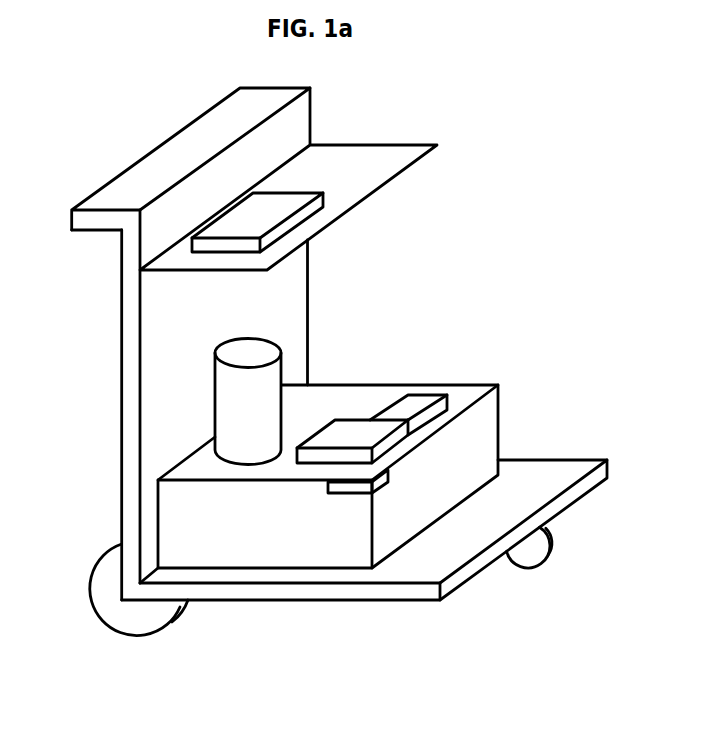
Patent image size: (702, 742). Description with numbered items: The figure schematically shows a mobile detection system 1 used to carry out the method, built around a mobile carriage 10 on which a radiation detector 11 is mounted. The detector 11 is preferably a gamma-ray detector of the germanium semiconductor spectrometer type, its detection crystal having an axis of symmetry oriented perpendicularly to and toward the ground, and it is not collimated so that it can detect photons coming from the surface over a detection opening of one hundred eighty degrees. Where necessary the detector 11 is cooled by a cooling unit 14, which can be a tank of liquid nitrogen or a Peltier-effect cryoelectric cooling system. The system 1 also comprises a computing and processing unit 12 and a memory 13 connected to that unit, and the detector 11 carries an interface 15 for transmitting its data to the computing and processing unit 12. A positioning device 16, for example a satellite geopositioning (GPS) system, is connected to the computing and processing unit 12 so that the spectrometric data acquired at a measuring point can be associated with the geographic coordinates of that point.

The mobile detection system 1 is at (505, 283).
The mobile carriage 10 is at (193, 148).
The radiation detector 11 is at (263, 540).
The computing and processing unit 12 is at (353, 433).
The memory 13 is at (405, 407).
The cooling unit 14 is at (242, 398).
The interface 15 is at (347, 486).
The positioning device 16 is at (257, 215).